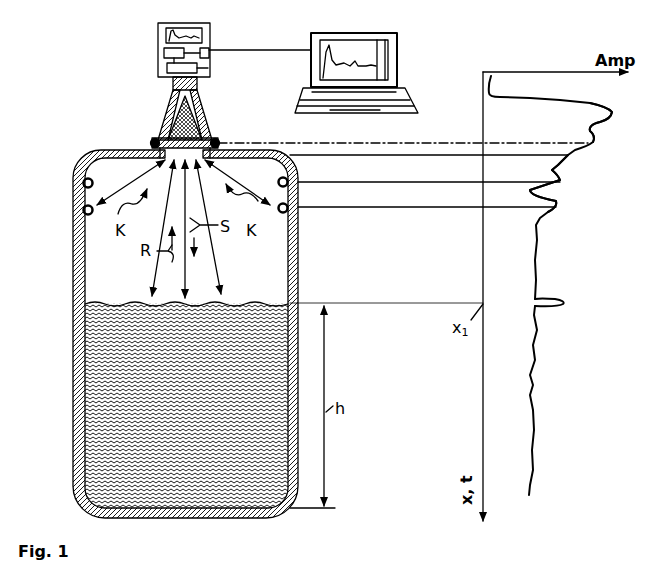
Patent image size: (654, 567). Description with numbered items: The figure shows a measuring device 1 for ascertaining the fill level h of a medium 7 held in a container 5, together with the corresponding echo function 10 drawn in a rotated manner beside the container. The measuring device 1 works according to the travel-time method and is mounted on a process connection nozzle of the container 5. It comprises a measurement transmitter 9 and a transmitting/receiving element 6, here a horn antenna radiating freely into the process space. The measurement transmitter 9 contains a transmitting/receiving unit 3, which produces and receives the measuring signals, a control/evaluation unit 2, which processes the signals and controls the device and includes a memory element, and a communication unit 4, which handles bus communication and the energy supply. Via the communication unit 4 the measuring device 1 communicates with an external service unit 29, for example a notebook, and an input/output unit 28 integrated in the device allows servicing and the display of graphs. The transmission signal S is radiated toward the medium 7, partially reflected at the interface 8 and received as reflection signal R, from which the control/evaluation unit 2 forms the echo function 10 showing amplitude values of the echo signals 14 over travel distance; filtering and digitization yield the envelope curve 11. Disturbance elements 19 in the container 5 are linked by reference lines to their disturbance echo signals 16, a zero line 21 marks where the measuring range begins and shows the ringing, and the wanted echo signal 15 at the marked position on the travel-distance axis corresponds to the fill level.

The measuring device 1 is at (247, 90).
The control/evaluation unit 2 is at (164, 53).
The transmitting/receiving unit 3 is at (178, 68).
The communication unit 4 is at (209, 50).
The container 5 is at (92, 157).
The transmitting/receiving element 6 is at (222, 124).
The medium 7 is at (80, 372).
The interface 8 is at (96, 299).
The measurement transmitter 9 is at (198, 68).
The echo function 10 is at (562, 285).
The envelope curve 11 is at (532, 395).
The echo signals 14 is at (581, 230).
The wanted echo signal 15 is at (566, 300).
The disturbance echo signals 16 is at (553, 206).
The disturbance elements 19 is at (82, 208).
The zero line 21 is at (596, 138).
The input/output unit 28 is at (168, 36).
The external service unit 29 is at (410, 64).